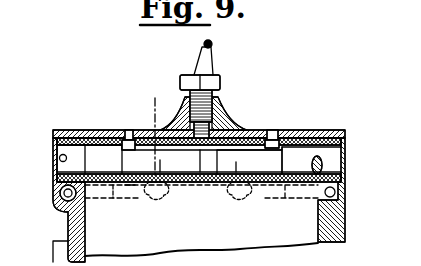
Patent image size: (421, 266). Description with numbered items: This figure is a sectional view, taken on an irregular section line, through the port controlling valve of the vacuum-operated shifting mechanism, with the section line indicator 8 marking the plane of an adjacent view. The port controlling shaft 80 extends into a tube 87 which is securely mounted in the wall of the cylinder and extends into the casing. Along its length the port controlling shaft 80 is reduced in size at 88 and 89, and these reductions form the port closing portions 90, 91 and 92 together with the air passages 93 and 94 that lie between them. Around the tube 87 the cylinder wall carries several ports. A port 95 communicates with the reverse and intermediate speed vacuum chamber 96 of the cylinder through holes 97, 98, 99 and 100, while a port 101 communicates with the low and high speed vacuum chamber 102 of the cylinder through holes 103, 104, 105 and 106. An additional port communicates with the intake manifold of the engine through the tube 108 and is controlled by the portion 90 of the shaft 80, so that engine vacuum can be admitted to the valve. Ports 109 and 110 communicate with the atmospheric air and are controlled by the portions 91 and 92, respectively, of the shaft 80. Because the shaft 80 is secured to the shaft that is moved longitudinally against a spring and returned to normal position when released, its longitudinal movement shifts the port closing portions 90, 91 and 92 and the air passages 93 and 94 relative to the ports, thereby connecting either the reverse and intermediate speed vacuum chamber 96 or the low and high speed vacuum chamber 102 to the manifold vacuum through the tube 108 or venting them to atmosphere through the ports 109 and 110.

The section line 8- 8 is at (167, 116).
The port controlling shaft 80 is at (316, 156).
The tube 87 is at (211, 184).
The reduced portion 88 is at (236, 165).
The reduced portion 89 is at (134, 183).
The port closing portion 90 is at (214, 181).
The port closing portion 91 is at (285, 150).
The port closing portion 92 is at (120, 148).
The air passage 93 is at (241, 137).
The air passage 94 is at (173, 117).
The port 95 is at (243, 181).
The reverse and intermediate speed vacuum chamber 96 is at (296, 244).
The hole 97 is at (248, 197).
The hole 98 is at (290, 199).
The hole 99 is at (336, 192).
The hole 100 is at (326, 189).
The port 101 is at (174, 161).
The low and high speed vacuum chamber 102 is at (207, 172).
The hole 103 is at (168, 197).
The hole 104 is at (113, 199).
The hole 105 is at (62, 206).
The hole 106 is at (78, 194).
The tube 108 is at (210, 61).
The port 109 is at (274, 131).
The port 110 is at (127, 130).